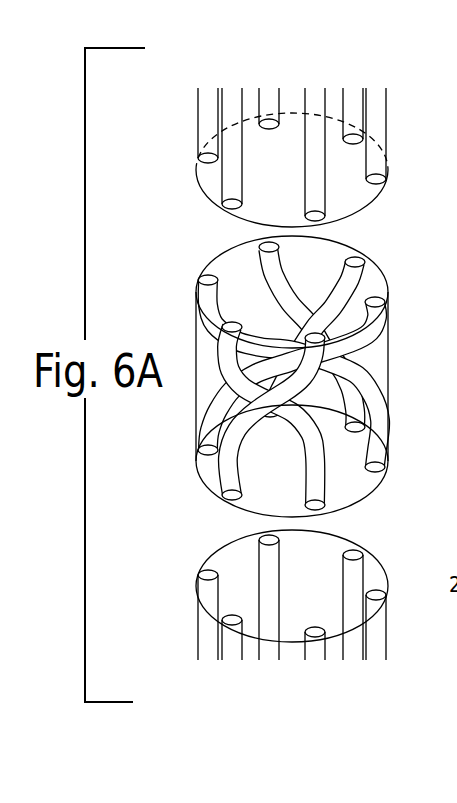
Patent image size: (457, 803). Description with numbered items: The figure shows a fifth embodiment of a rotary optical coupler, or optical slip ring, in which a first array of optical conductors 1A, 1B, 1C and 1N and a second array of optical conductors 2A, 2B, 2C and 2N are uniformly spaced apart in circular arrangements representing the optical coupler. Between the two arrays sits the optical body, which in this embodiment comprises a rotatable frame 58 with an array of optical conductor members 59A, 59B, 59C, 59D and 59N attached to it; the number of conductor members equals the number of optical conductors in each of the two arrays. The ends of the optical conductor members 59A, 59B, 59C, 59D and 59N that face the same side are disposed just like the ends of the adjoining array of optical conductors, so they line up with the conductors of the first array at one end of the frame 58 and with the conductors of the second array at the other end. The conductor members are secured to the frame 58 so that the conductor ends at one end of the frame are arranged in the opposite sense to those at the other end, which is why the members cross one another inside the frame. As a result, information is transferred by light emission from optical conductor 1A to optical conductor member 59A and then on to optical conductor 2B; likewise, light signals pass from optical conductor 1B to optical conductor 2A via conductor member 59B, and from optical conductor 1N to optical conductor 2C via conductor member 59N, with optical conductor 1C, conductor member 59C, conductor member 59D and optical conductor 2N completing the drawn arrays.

The optical conductor 1N is at (203, 153).
The optical conductor 1A is at (230, 203).
The optical conductor 1B is at (326, 209).
The optical conductor 1C is at (381, 176).
The rotatable frame 58 is at (196, 380).
The optical conductor member 59A is at (221, 337).
The optical conductor member 59B is at (320, 348).
The optical conductor member 59C is at (381, 311).
The optical conductor member 59D is at (362, 267).
The optical conductor member 59N is at (206, 293).
The optical conductor 2N is at (206, 636).
The optical conductor 2A is at (232, 657).
The optical conductor 2B is at (314, 657).
The optical conductor 2C is at (380, 636).